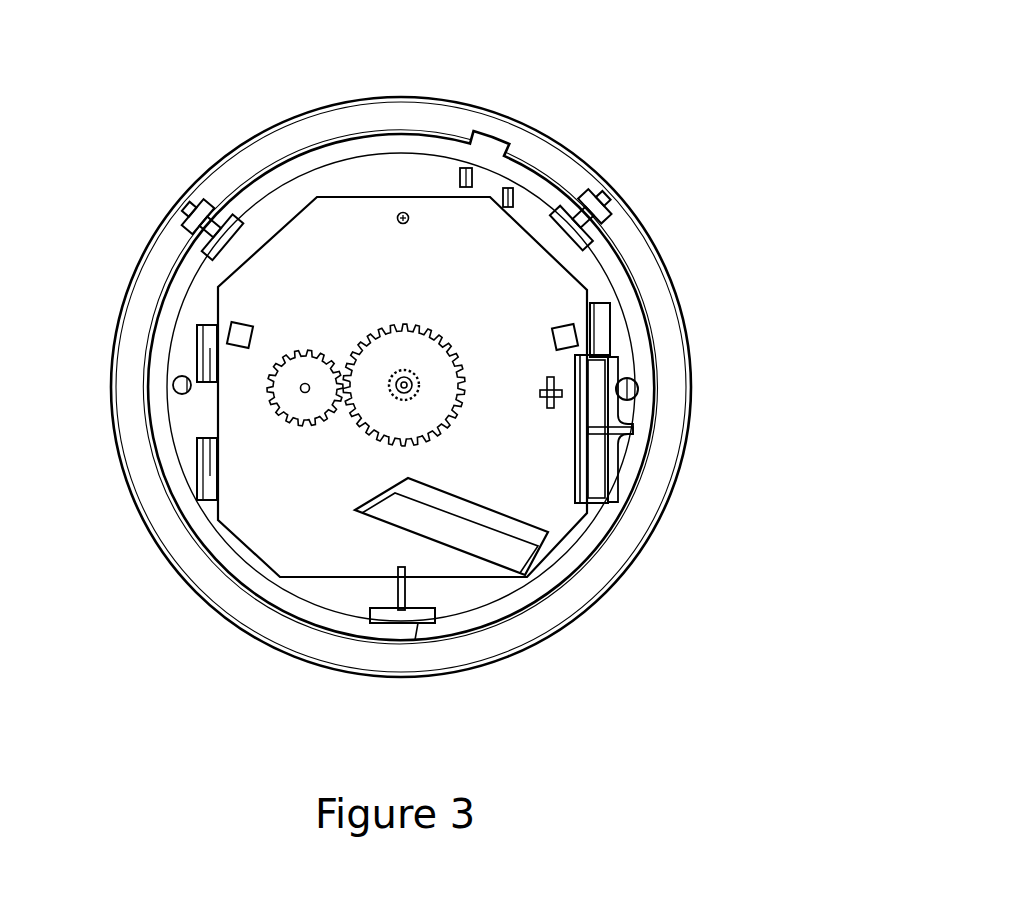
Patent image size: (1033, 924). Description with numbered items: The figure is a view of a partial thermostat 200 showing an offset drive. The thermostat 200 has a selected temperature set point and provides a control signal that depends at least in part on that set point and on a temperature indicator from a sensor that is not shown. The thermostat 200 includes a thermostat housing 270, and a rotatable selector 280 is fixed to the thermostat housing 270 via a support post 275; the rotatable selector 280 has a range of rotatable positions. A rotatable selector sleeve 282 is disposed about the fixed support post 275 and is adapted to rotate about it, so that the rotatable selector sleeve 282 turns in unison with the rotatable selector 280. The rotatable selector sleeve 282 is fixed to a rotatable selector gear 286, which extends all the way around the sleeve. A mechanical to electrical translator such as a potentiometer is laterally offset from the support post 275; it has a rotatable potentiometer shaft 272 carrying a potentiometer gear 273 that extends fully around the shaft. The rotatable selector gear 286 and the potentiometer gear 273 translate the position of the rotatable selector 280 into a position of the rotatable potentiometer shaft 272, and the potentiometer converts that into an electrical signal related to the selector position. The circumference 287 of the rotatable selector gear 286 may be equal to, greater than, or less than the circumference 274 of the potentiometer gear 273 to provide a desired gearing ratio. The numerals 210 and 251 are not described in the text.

The thermostat 200 is at (566, 104).
The housing 210 is at (680, 340).
The thermostat housing 270 is at (620, 276).
The rotatable potentiometer shaft 272 is at (303, 389).
The potentiometer gear 273 is at (309, 361).
The circumference 274 is at (302, 348).
The support post 275 is at (418, 386).
The rotatable selector 280 is at (420, 309).
The shaft 251 is at (406, 383).
The rotatable selector sleeve 282 is at (422, 403).
The rotatable selector gear 286 is at (390, 446).
The circumference 287 is at (430, 443).